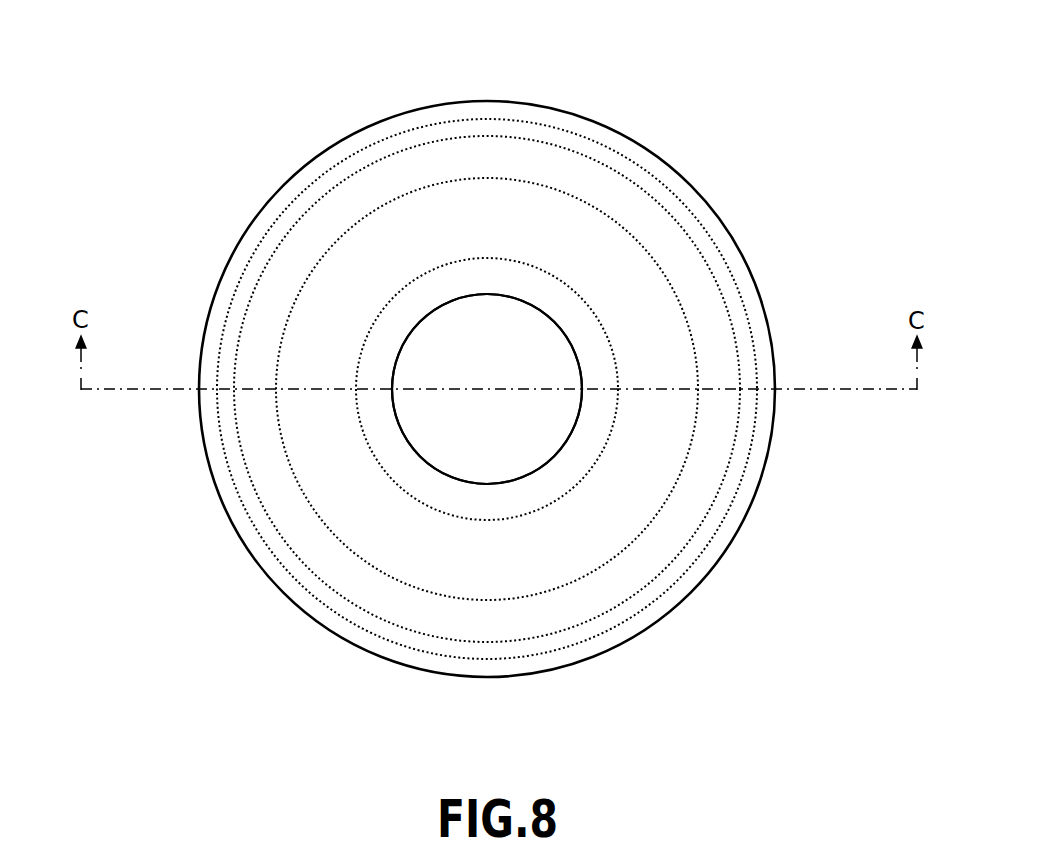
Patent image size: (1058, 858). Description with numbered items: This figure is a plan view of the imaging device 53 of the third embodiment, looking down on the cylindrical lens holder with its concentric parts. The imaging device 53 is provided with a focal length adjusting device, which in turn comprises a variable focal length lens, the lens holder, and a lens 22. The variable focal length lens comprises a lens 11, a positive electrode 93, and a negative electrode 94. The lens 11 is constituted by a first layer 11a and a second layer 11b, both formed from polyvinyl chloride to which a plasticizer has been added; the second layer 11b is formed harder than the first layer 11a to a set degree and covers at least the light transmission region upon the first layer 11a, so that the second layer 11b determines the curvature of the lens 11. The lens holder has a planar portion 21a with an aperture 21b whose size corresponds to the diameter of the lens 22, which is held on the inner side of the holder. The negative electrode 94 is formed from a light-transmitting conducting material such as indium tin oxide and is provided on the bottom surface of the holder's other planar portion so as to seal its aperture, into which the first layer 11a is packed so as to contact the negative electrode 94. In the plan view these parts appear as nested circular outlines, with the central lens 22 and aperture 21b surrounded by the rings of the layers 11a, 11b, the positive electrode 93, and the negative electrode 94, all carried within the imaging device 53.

The imaging device 53 is at (785, 103).
The negative electrode 94 is at (539, 389).
The positive electrode 93 is at (546, 389).
The planar portion 21a is at (515, 122).
The aperture 21b is at (534, 268).
The lens 22 is at (554, 287).
The lens 11 is at (787, 140).
The first layer 11a is at (554, 389).
The second layer 11b is at (571, 338).